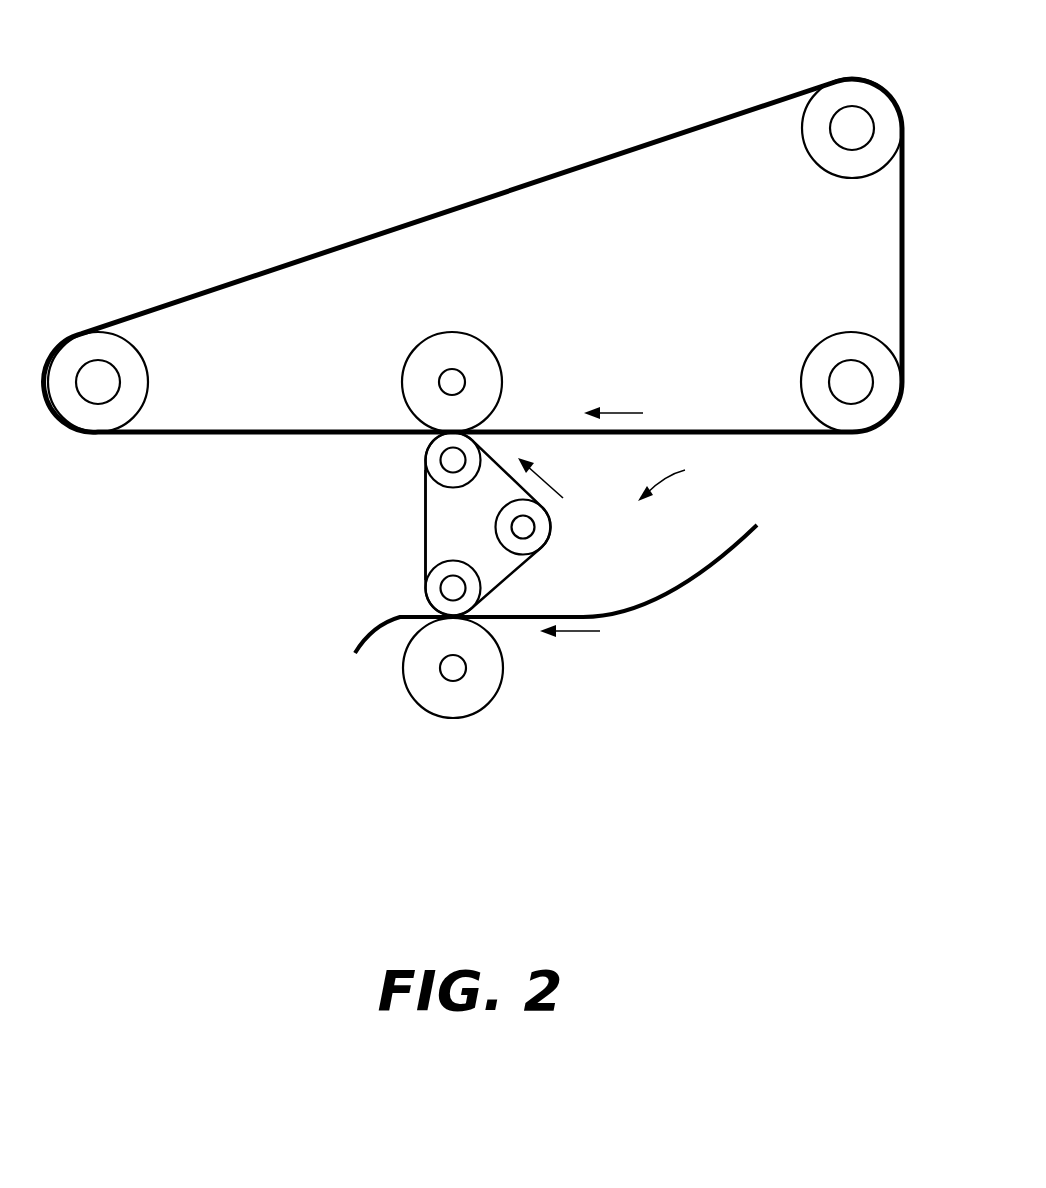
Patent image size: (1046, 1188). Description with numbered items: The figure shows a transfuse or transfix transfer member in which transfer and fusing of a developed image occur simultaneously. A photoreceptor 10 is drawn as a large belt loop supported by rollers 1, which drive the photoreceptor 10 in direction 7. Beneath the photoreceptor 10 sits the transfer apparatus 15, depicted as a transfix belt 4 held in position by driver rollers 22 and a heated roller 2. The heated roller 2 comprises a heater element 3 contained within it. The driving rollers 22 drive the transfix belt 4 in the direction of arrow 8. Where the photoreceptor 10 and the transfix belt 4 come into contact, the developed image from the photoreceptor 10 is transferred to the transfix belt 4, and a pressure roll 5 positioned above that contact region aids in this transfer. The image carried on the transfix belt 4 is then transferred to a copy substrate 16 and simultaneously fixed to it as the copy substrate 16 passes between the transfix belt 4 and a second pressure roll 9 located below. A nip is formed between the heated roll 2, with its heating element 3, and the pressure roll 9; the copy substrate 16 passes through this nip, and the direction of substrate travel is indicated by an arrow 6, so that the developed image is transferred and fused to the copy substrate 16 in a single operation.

The rollers 1 is at (853, 86).
The photoreceptor 10 is at (177, 453).
The pressure roll 5 is at (478, 352).
The direction 7 is at (620, 412).
The driver rollers 22 is at (430, 452).
The heated roller 2 is at (425, 604).
The transfix belt 4 is at (424, 496).
The heater element 3 is at (455, 590).
The arrow 8 is at (550, 483).
The transfer apparatus 15 is at (695, 482).
The copy substrate 16 is at (688, 578).
The recording medium feed direction 6 is at (570, 632).
The pressure roll 9 is at (445, 705).